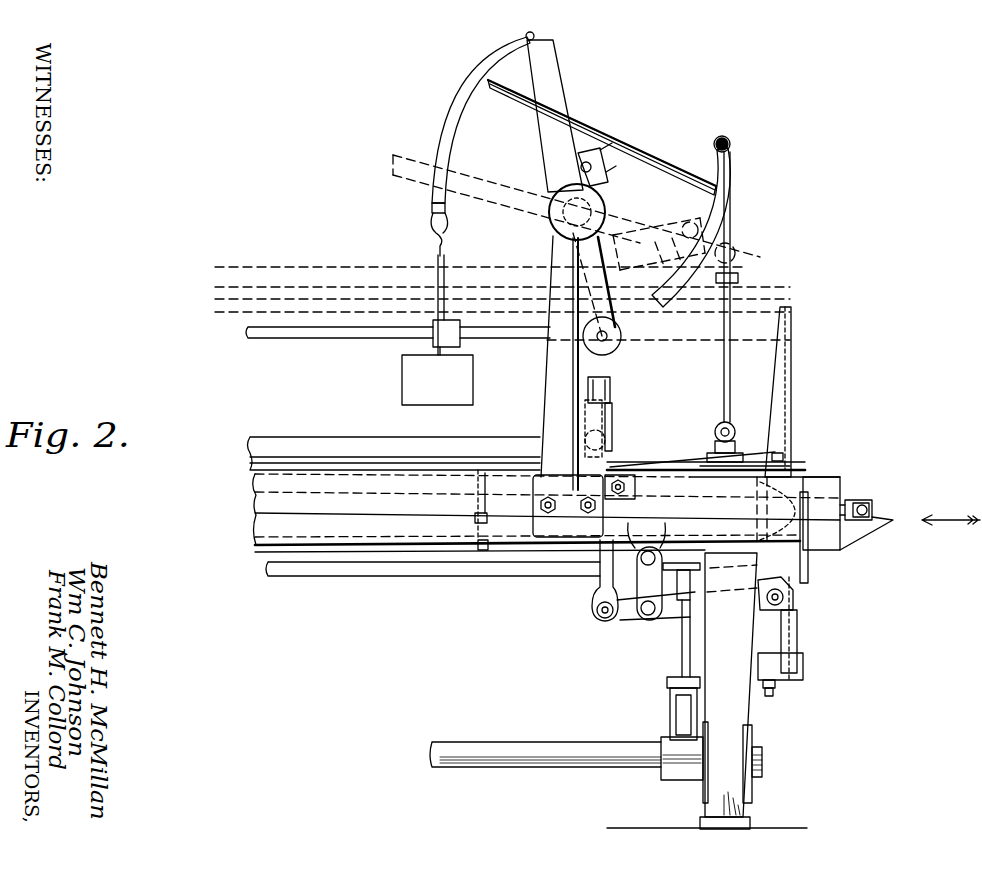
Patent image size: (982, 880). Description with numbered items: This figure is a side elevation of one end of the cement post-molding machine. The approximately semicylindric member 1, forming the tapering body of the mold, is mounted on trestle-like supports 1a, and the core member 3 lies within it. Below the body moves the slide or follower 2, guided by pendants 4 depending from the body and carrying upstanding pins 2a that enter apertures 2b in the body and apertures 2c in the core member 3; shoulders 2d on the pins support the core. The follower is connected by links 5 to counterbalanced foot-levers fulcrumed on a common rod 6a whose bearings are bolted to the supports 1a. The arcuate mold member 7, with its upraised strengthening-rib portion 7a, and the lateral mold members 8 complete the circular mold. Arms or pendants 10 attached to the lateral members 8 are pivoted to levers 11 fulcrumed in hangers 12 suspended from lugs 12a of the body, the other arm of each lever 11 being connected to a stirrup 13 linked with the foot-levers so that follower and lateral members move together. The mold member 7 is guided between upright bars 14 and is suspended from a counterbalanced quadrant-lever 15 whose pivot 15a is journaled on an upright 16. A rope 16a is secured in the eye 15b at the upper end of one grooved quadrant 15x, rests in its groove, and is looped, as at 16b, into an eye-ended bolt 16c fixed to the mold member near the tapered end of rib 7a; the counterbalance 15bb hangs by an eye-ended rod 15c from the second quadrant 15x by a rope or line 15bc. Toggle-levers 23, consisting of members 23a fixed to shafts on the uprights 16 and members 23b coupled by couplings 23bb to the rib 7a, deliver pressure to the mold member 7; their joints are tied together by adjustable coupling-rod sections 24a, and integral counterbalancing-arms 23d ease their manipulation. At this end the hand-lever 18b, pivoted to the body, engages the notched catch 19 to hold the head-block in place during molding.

The semicylindric member 1 is at (395, 524).
The trestle-like framing or supports 1a is at (707, 691).
The slide or follower 2 is at (298, 578).
The upstanding pins 2a is at (478, 522).
The apertures 2b is at (482, 548).
The apertures 2c is at (477, 508).
The shoulders 2d is at (488, 497).
The core member 3 is at (262, 503).
The guides or pendants 4 is at (795, 600).
The links or arms 5 is at (677, 671).
The rod or shaft 6a is at (578, 740).
The arcuate or curved mold member 7 is at (662, 463).
The upraised strengthening-rib portion 7a is at (451, 458).
The lateral mold members 8 is at (745, 467).
The arms or pendants 10 is at (599, 572).
The levers 11 is at (618, 622).
The hangers 12 is at (649, 583).
The lugs 12a is at (652, 537).
The stirrup 13 is at (804, 622).
The upright bars or guides 14 is at (789, 375).
The quadrant-lever 15 is at (651, 162).
The fulcrum axis or pivot 15a is at (526, 36).
The eye 15b is at (718, 139).
The counterbalance 15bb is at (400, 396).
The hook 15bc is at (433, 219).
The eye-ended rod 15c is at (436, 262).
The grooved quadrant 15x is at (455, 110).
The uprights or standards 16 is at (546, 407).
The line or rope 16a is at (723, 385).
The loop 16b is at (735, 432).
The eye-ended bolt 16c is at (737, 457).
The actuating hand-lever 18b is at (882, 490).
The notched or shouldered catch 19 is at (853, 533).
The toggle-lever 23 is at (613, 355).
The toggle member 23a is at (573, 257).
The toggle member 23b is at (612, 374).
The coupling 23bb is at (618, 428).
The counterbalancing-arm 23d is at (569, 104).
The coupling-rod section 24a is at (312, 337).